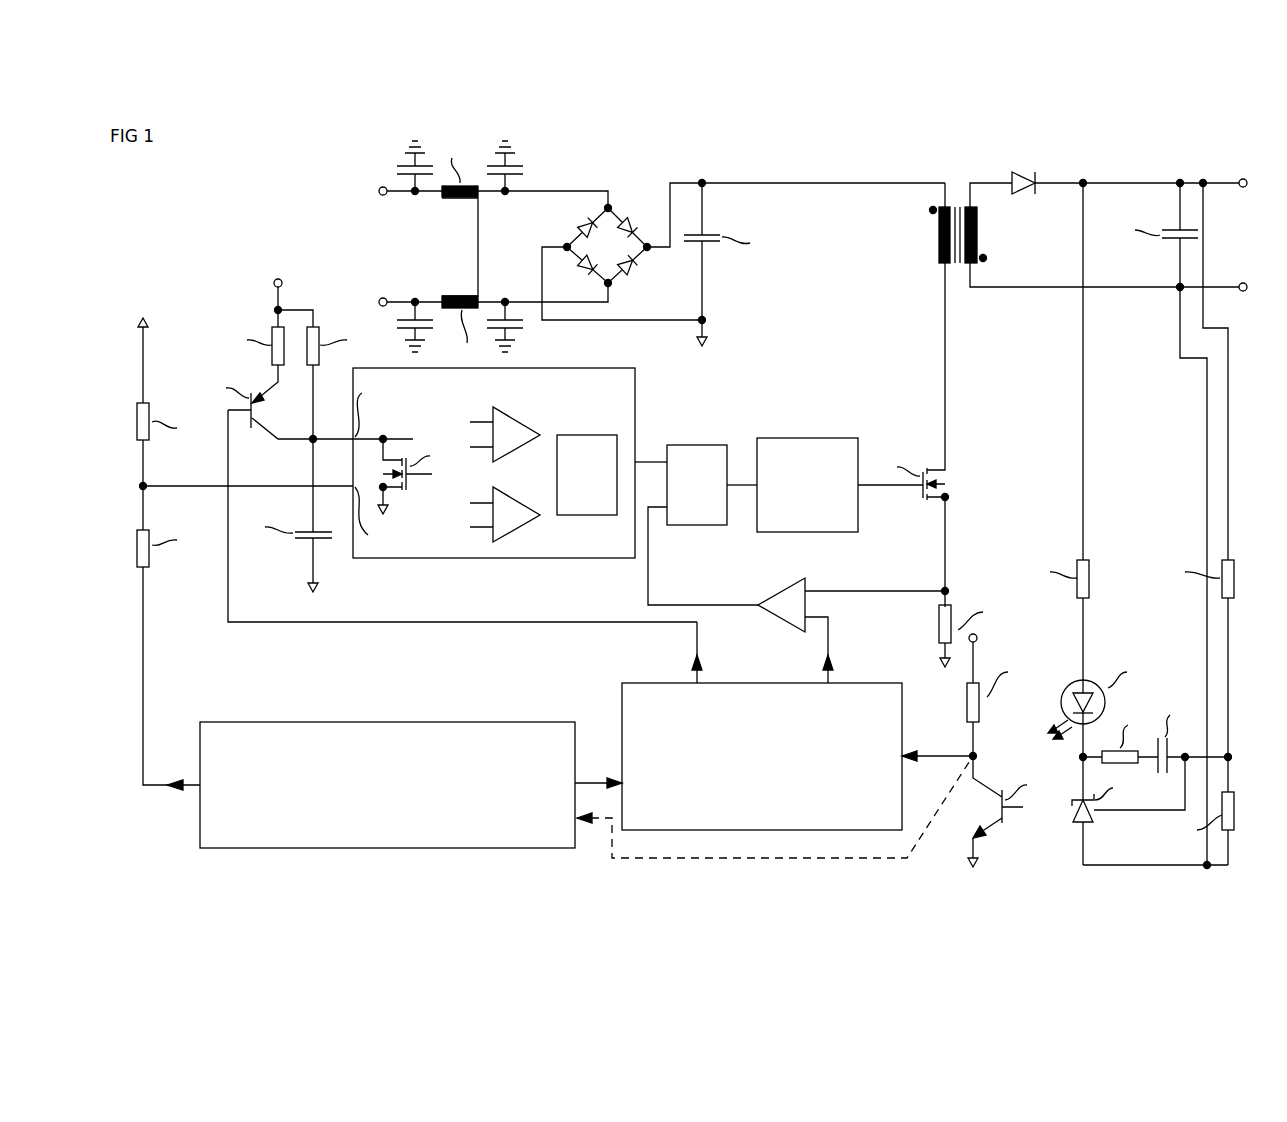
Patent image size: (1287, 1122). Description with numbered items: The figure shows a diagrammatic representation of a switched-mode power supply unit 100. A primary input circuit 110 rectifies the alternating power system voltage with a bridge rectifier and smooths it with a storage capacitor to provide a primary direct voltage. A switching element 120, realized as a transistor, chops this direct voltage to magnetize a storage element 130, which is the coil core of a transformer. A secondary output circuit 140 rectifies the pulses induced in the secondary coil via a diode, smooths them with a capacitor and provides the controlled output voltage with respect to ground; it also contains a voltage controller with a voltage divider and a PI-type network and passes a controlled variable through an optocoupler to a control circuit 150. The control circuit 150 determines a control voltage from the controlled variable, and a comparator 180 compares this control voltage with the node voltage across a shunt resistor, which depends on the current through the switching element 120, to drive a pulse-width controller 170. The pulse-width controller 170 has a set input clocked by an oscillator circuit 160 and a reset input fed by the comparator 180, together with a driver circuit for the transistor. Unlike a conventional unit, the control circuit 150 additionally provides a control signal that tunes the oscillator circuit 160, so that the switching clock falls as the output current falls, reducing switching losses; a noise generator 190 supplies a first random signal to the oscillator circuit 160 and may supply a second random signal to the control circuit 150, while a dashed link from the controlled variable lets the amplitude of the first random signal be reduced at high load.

The switched-mode power supply unit 100 is at (175, 218).
The primary input circuit 110 is at (608, 172).
The switching element 120 is at (913, 428).
The storage element 130 is at (973, 305).
The secondary output circuit 140 is at (997, 172).
The control circuit 150 is at (622, 710).
The oscillator circuit 160 is at (223, 292).
The pulse-width controller 170 is at (732, 368).
The comparator 180 is at (783, 620).
The noise generator 190 is at (390, 722).